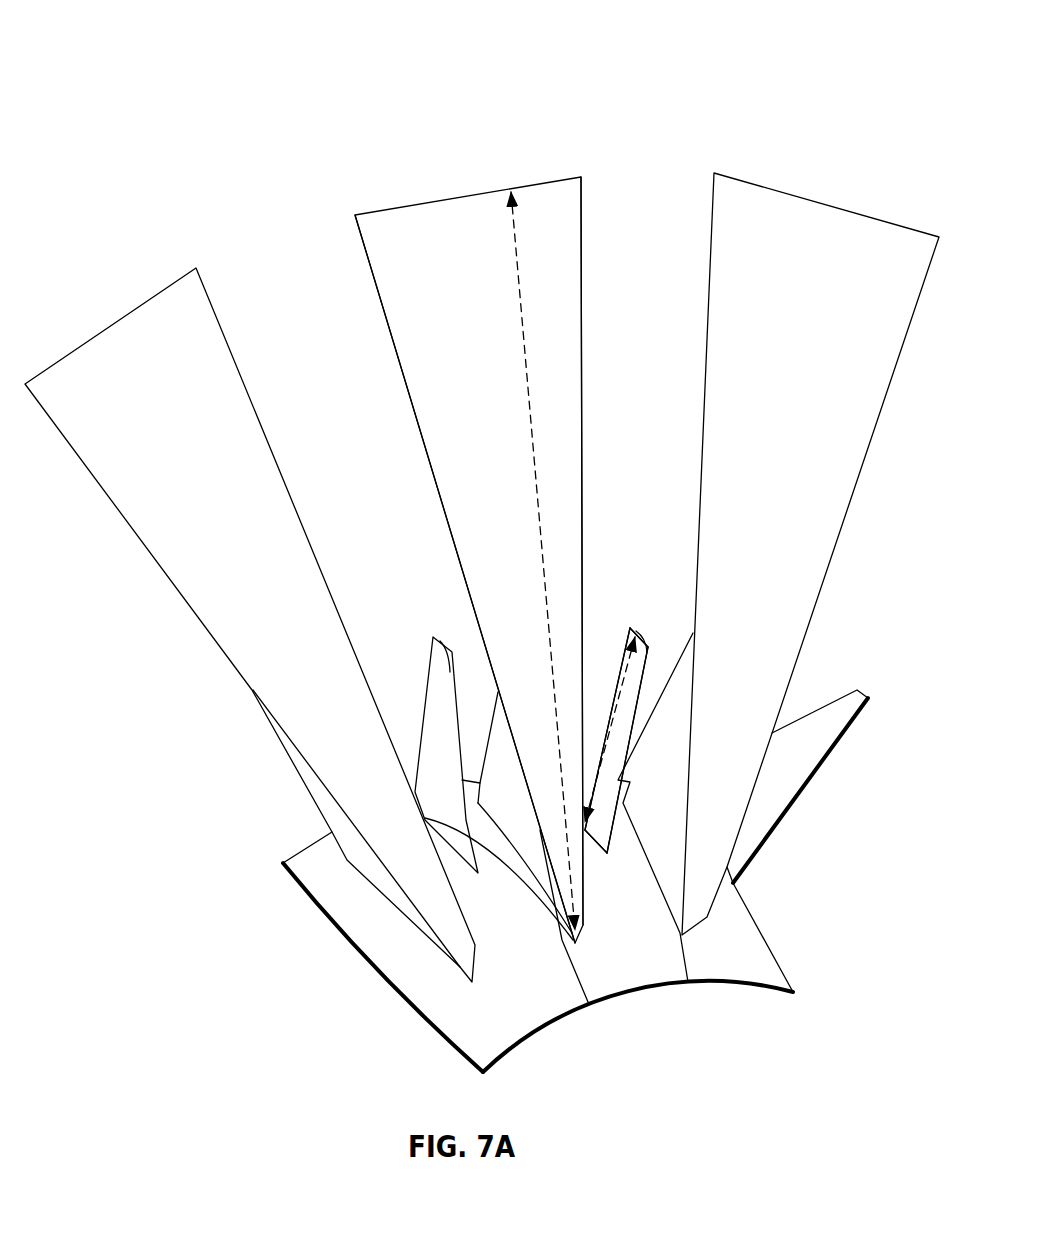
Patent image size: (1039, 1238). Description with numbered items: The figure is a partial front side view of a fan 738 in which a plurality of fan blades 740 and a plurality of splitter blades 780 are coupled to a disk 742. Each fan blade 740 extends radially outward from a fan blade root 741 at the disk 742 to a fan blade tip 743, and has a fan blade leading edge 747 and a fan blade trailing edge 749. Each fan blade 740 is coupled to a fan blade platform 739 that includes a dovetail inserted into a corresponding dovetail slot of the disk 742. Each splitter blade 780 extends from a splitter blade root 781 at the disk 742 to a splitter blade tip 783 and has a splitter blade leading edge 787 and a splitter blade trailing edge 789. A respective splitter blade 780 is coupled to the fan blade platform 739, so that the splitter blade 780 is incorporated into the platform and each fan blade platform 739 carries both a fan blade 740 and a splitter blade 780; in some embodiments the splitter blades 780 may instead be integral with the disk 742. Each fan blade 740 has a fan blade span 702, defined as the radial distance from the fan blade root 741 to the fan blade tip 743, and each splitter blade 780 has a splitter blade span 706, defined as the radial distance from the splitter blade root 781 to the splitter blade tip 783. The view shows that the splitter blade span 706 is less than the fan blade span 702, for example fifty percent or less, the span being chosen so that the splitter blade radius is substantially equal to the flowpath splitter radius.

The fan 738 is at (197, 46).
The fan blade 740 is at (829, 71).
The fan blade tip 743 is at (478, 192).
The fan blade leading edge 747 is at (358, 236).
The fan blade trailing edge 749 is at (582, 267).
The fan blade span 702 is at (517, 257).
The splitter blade 780 is at (634, 624).
The splitter blade tip 783 is at (645, 655).
The splitter blade leading edge 787 is at (578, 670).
The splitter blade trailing edge 789 is at (582, 725).
The splitter blade span 706 is at (610, 735).
The splitter blade root 781 is at (585, 832).
The fan blade root 741 is at (530, 862).
The fan blade platform 739 is at (608, 978).
The disk 742 is at (713, 983).